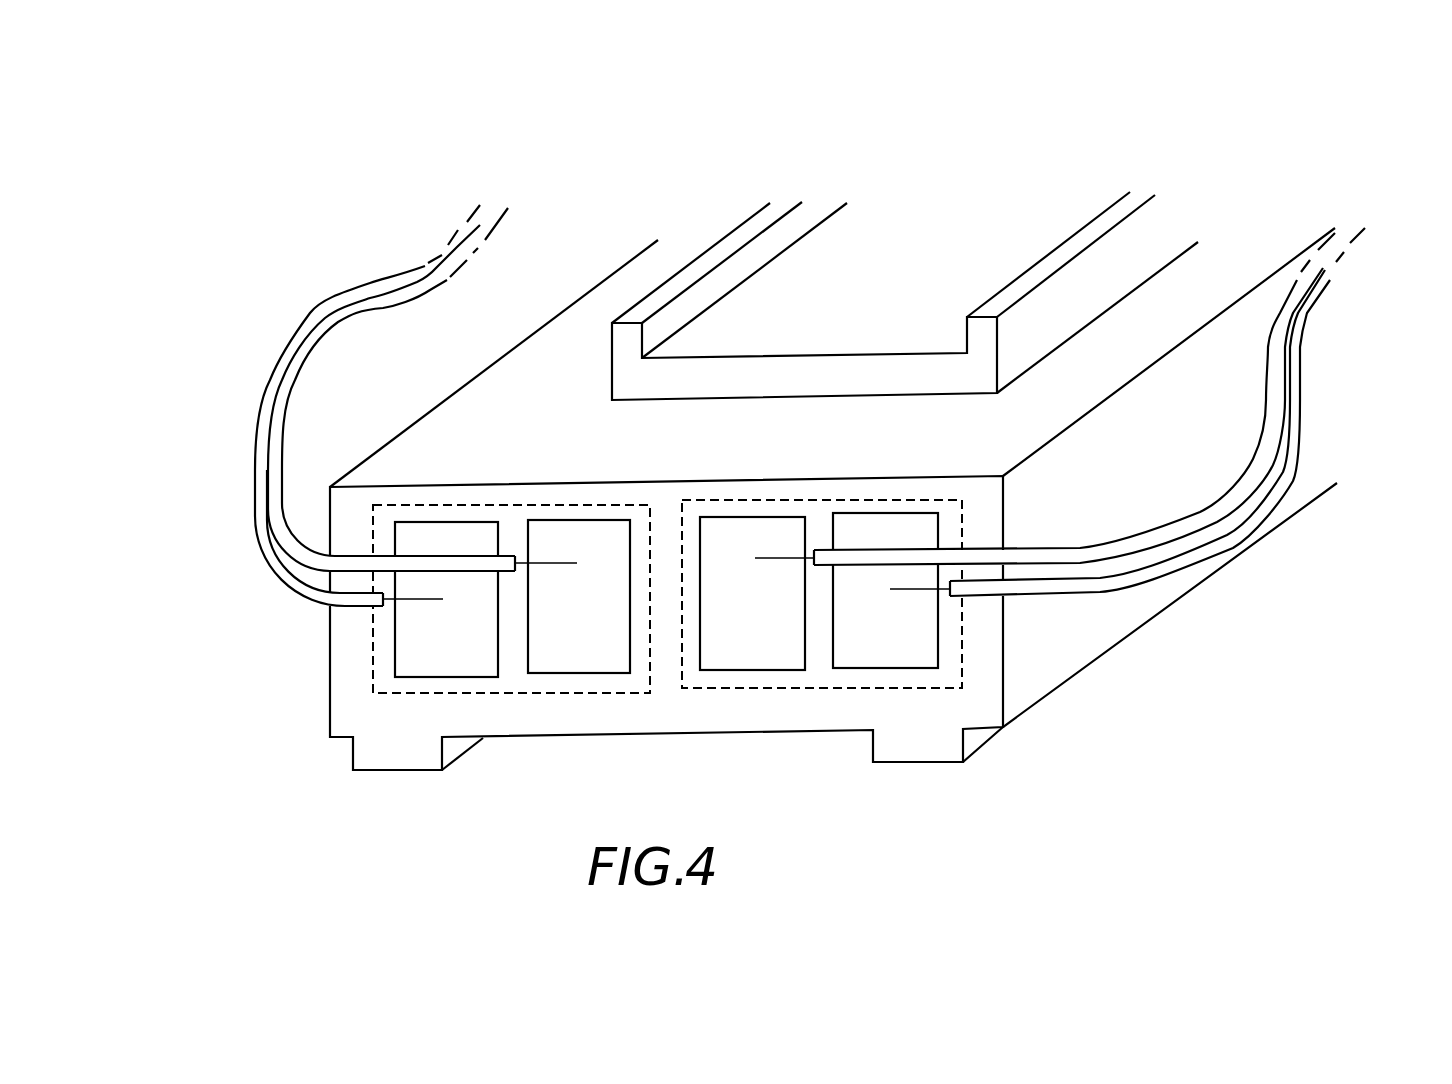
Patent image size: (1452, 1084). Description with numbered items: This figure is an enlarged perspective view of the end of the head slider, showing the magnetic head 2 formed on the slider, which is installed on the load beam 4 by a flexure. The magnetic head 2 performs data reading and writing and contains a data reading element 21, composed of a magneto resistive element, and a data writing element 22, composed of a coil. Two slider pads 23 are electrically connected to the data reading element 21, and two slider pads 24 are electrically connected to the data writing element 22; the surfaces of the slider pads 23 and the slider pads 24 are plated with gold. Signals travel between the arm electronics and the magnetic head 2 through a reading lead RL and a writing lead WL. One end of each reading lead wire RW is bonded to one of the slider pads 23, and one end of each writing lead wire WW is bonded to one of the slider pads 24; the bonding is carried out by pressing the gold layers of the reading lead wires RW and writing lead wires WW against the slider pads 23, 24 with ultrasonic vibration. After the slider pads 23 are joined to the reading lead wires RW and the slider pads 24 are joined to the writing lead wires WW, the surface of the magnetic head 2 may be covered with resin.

The magnetic head 2 is at (670, 717).
The load beam 4 is at (1088, 297).
The data reading element 21 is at (542, 695).
The data writing element 22 is at (807, 688).
The slider pads 23 is at (450, 532).
The slider pads 24 is at (743, 527).
The reading lead RL is at (343, 283).
The reading lead wires RW is at (277, 423).
The writing lead wires WW is at (1275, 383).
The writing lead WL is at (1318, 423).